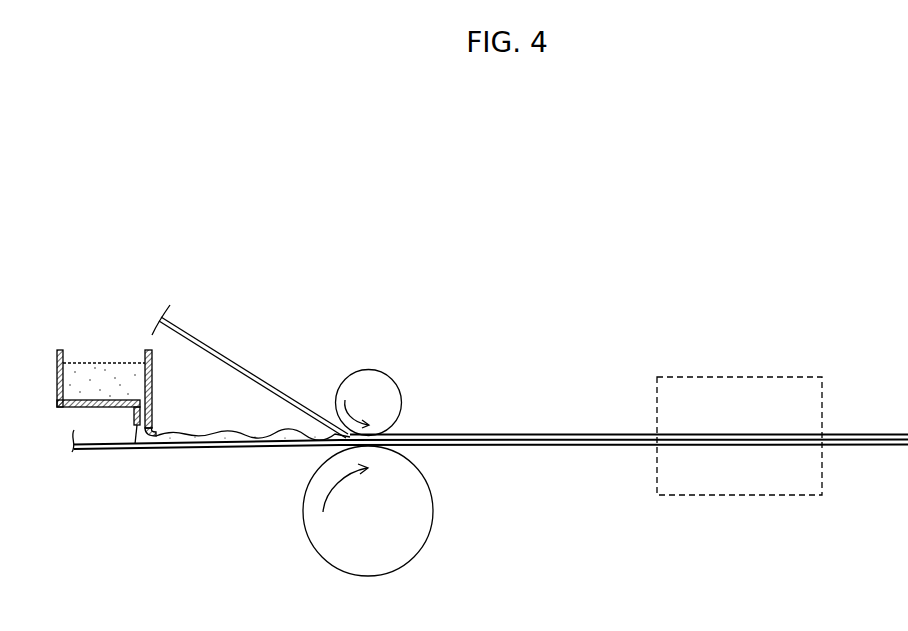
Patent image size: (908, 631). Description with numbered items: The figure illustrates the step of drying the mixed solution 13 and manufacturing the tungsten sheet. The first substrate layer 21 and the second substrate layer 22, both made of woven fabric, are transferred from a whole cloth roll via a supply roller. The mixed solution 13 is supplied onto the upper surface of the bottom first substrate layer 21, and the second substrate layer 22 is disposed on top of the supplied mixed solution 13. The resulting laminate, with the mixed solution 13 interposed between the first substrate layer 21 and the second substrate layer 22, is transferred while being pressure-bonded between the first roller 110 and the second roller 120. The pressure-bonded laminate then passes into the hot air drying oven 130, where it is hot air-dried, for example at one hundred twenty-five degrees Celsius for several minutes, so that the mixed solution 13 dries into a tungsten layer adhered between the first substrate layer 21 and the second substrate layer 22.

The mixed solution 13 is at (91, 368).
The first substrate layer 21 is at (228, 452).
The second substrate layer 22 is at (221, 352).
The first roller 110 is at (433, 514).
The second roller 120 is at (379, 373).
The hot air drying oven 130 is at (822, 377).